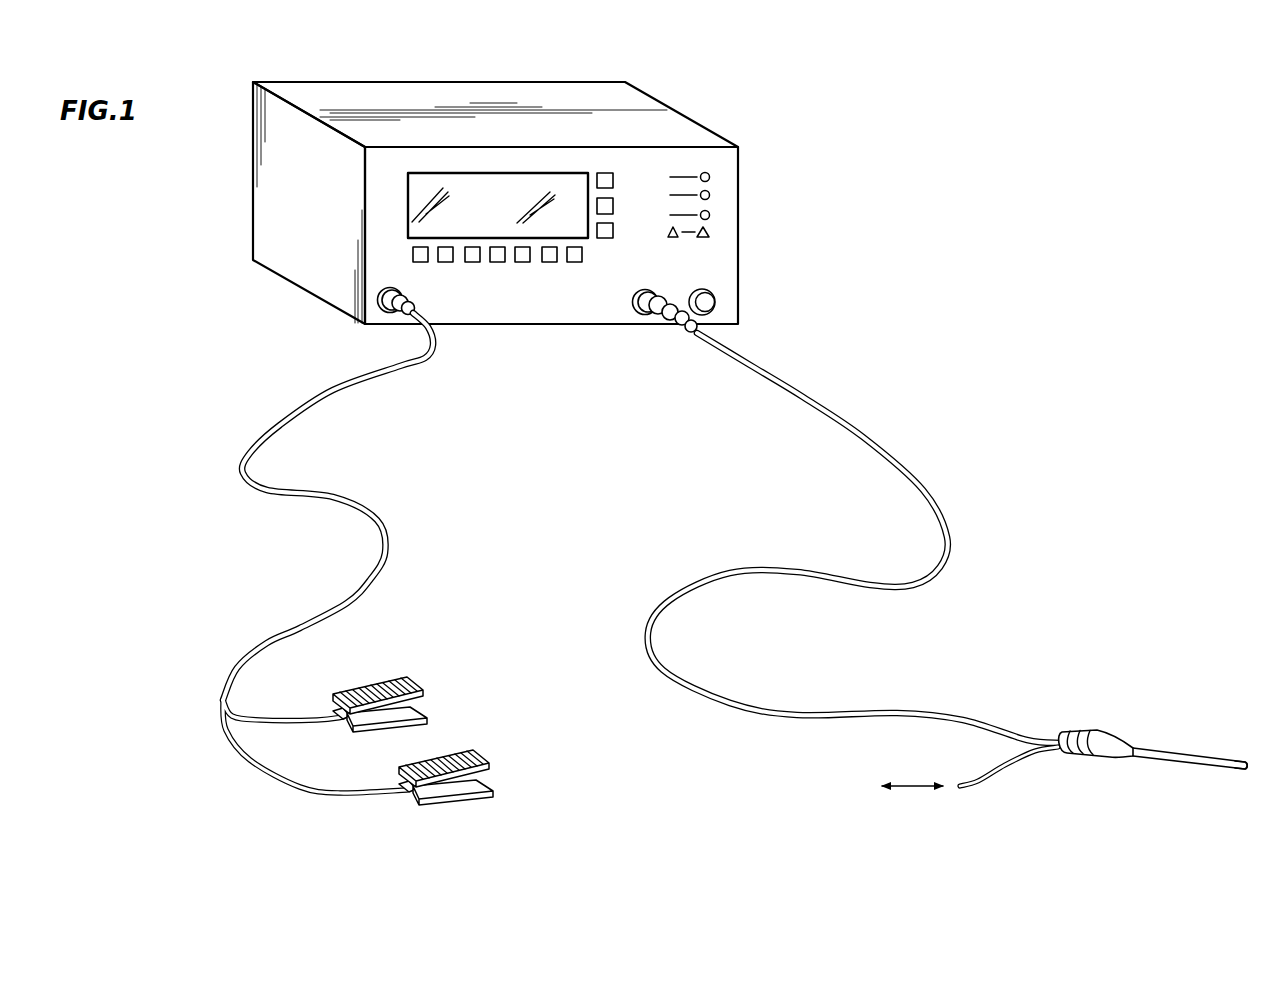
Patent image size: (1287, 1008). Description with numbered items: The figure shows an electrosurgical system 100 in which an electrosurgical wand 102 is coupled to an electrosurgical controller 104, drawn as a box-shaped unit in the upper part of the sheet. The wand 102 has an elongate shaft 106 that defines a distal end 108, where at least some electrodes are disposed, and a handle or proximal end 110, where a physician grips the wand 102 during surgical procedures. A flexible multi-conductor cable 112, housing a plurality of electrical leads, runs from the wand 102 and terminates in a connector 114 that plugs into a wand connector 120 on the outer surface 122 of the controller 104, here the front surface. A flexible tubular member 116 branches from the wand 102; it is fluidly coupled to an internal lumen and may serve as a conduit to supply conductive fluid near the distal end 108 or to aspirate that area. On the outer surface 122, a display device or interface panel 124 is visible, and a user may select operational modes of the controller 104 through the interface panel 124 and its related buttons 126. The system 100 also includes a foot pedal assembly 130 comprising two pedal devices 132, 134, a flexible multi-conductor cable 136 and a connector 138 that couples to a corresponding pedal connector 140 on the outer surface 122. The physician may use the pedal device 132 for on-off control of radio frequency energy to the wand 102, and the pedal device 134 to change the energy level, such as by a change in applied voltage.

The electrosurgical system 100 is at (862, 120).
The electrosurgical wand 102 is at (1105, 708).
The electrosurgical controller 104 is at (578, 92).
The elongate shaft 106 is at (1152, 760).
The distal end 108 is at (1243, 782).
The handle or proximal end 110 is at (1085, 772).
The flexible multi-conductor cable 112 is at (928, 480).
The connector 114 is at (687, 327).
The flexible tubular member 116 is at (973, 790).
The wand connector 120 is at (647, 288).
The outer surface 122 is at (589, 306).
The display device or interface panel 124 is at (508, 220).
The buttons 126 is at (627, 237).
The foot pedal assembly 130 is at (432, 502).
The pedal device 132 is at (382, 678).
The pedal device 134 is at (475, 802).
The flexible multi-conductor cable 136 is at (298, 503).
The connector 138 is at (405, 322).
The pedal connector 140 is at (377, 299).